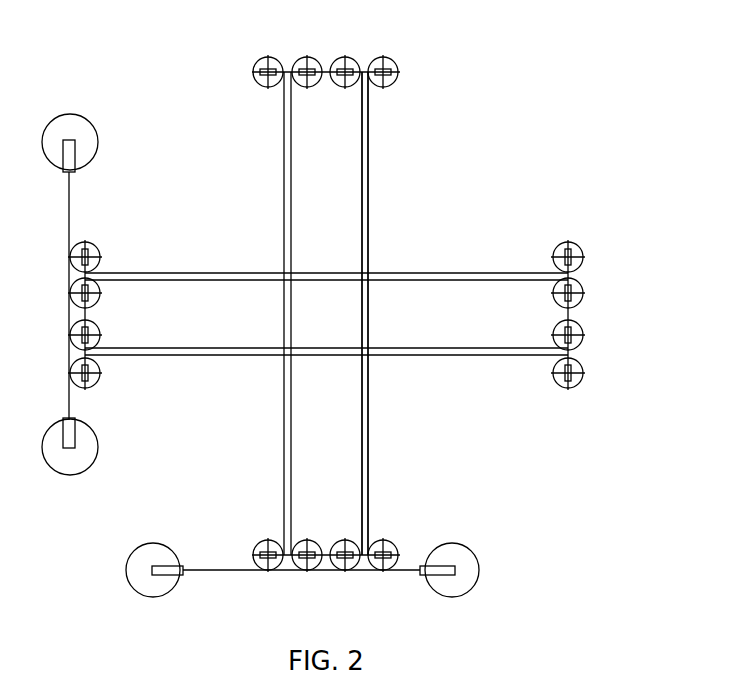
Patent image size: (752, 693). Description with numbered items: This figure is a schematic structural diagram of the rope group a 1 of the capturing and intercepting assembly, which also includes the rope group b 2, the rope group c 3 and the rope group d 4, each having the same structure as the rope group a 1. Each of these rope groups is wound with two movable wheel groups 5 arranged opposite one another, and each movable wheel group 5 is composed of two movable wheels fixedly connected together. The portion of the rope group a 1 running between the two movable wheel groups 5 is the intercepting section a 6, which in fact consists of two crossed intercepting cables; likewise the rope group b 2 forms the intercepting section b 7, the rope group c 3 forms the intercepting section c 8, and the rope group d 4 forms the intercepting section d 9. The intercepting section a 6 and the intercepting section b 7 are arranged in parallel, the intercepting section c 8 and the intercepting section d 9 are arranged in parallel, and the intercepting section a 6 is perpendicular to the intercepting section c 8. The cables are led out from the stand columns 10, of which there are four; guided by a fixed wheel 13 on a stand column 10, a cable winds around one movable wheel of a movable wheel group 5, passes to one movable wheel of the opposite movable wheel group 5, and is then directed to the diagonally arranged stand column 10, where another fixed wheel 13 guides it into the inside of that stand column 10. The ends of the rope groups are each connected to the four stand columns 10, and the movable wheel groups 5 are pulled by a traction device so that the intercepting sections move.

The rope group a 1 is at (288, 565).
The rope group b 2 is at (364, 105).
The rope group c 3 is at (80, 288).
The rope group d 4 is at (575, 355).
The movable wheel group 5 is at (255, 70).
The intercepting section a 6 is at (284, 172).
The intercepting section b 7 is at (366, 247).
The intercepting section c 8 is at (466, 273).
The intercepting section d 9 is at (443, 355).
The stand column 10 is at (140, 547).
The fixed wheel 13 is at (72, 150).